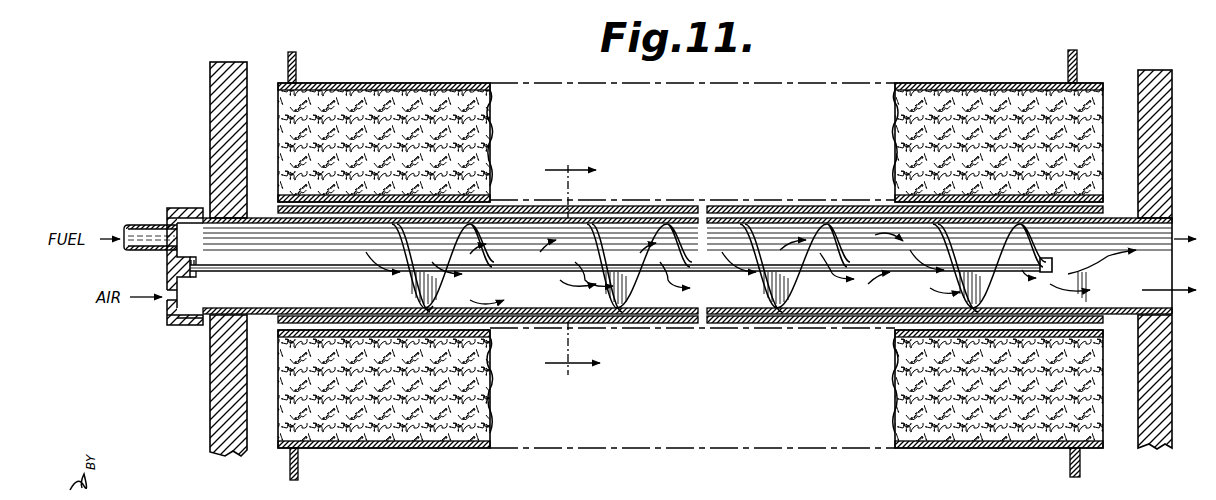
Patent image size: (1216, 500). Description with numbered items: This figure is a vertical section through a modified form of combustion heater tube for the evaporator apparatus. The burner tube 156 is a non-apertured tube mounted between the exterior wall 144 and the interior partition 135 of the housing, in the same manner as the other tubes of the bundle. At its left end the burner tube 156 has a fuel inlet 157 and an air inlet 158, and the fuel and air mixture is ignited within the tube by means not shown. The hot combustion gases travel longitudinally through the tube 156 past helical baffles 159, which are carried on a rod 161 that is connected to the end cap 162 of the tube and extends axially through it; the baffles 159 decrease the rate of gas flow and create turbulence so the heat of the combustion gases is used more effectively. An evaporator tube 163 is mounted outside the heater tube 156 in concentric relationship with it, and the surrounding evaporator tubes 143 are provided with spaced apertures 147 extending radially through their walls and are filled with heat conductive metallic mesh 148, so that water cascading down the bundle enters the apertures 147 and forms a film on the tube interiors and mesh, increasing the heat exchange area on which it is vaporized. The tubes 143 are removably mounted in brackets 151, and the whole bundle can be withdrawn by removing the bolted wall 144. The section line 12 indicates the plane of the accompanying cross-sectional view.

The section line 12 is at (562, 371).
The interior partition 135 is at (1160, 75).
The evaporator tube 143 is at (416, 83).
The exterior wall 144 is at (210, 85).
The spaced apertures 147 is at (962, 85).
The heat conductive metallic mesh 148 is at (910, 100).
The brackets 151 is at (298, 65).
The burner tube 156 is at (657, 218).
The fuel inlet 157 is at (140, 225).
The air inlet 158 is at (168, 303).
The helical baffles 159 is at (474, 235).
The rod 161 is at (290, 271).
The end cap 162 is at (176, 265).
The evaporator tube 163 is at (748, 218).